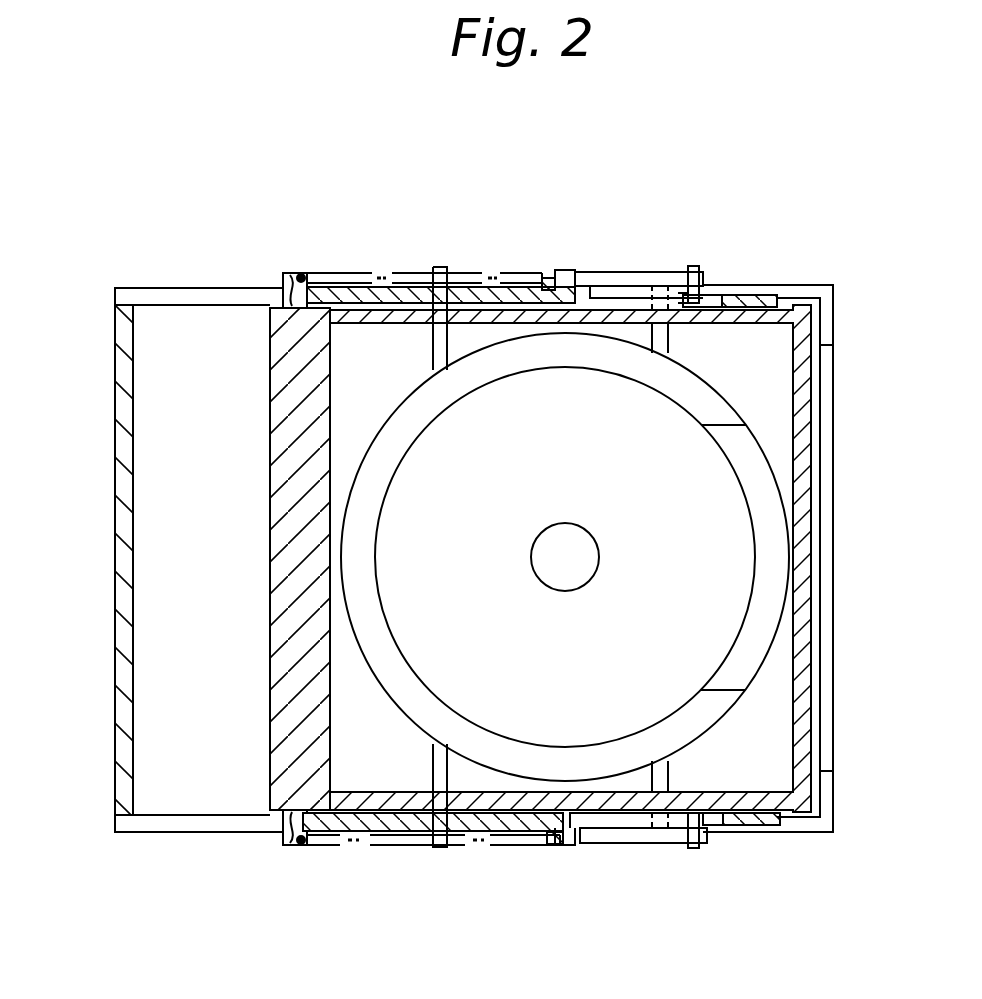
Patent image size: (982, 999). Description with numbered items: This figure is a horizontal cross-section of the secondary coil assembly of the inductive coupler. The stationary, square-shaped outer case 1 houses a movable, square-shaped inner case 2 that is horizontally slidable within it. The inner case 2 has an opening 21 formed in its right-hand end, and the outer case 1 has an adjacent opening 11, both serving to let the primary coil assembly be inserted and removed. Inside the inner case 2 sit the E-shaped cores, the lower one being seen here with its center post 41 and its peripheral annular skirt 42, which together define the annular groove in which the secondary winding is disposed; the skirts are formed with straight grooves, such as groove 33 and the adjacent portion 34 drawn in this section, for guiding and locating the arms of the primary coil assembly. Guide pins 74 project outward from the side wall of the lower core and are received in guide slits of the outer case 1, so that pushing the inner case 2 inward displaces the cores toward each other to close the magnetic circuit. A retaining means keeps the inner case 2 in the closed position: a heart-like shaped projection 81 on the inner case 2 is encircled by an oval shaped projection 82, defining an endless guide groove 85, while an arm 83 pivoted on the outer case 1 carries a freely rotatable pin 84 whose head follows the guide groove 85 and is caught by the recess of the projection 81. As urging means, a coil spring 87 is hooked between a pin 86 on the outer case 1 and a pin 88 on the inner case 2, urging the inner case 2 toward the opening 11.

The outer case 1 is at (110, 354).
The inner case 2 is at (278, 390).
The opening 11 is at (830, 485).
The opening 21 is at (805, 545).
The straight groove 33 is at (700, 392).
The outer portion of disk 34 is at (700, 722).
The center post 41 is at (578, 569).
The peripheral annular skirt 42 is at (397, 430).
The guide pin 74 is at (440, 267).
The heart-like shaped projection 81 is at (745, 298).
The oval shaped projection 82 is at (770, 300).
The arm 83 is at (634, 297).
The pin 84 is at (697, 266).
The guide groove 85 is at (720, 300).
The pin 86 is at (566, 270).
The coil spring 87 is at (472, 274).
The pin 88 is at (294, 272).